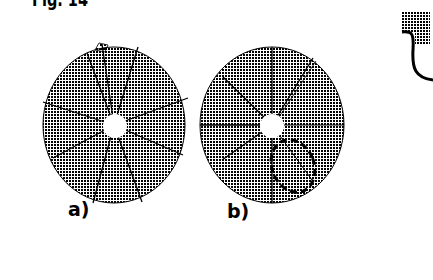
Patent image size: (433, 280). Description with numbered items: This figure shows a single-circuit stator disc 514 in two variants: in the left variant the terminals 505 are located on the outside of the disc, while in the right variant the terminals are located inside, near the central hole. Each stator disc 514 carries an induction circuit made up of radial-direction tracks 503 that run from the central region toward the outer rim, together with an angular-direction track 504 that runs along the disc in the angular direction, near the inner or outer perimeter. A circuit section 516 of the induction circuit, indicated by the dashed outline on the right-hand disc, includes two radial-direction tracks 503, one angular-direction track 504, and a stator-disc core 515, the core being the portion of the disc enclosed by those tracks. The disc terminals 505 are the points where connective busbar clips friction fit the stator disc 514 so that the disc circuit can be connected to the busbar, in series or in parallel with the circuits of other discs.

The radial-direction track 503 is at (47, 101).
The angular-direction track 504 is at (138, 53).
The disc terminal 505 is at (88, 51).
The stator disc 514 is at (54, 169).
The stator-disc core 515 is at (165, 170).
The circuit section 516 is at (313, 185).